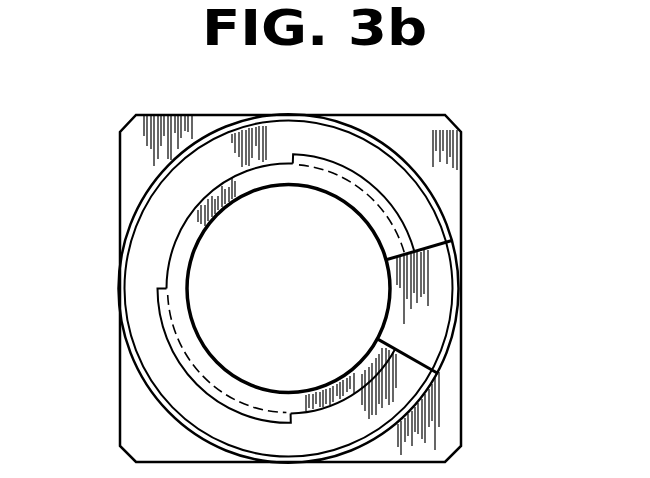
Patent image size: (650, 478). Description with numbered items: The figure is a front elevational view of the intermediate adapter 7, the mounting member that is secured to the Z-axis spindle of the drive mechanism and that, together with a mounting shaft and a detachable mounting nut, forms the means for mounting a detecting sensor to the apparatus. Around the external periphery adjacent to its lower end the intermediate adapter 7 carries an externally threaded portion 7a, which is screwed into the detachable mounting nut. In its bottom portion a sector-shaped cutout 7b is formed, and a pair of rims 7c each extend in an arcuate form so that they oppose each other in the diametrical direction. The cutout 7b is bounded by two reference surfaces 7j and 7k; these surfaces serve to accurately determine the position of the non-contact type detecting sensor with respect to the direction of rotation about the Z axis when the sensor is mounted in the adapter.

The intermediate adapter 7 is at (116, 417).
The externally threaded portion 7a is at (153, 186).
The sector-shaped cutout 7b is at (437, 310).
The rims 7c is at (385, 198).
The reference surface 7j is at (428, 247).
The reference surface 7k is at (420, 360).